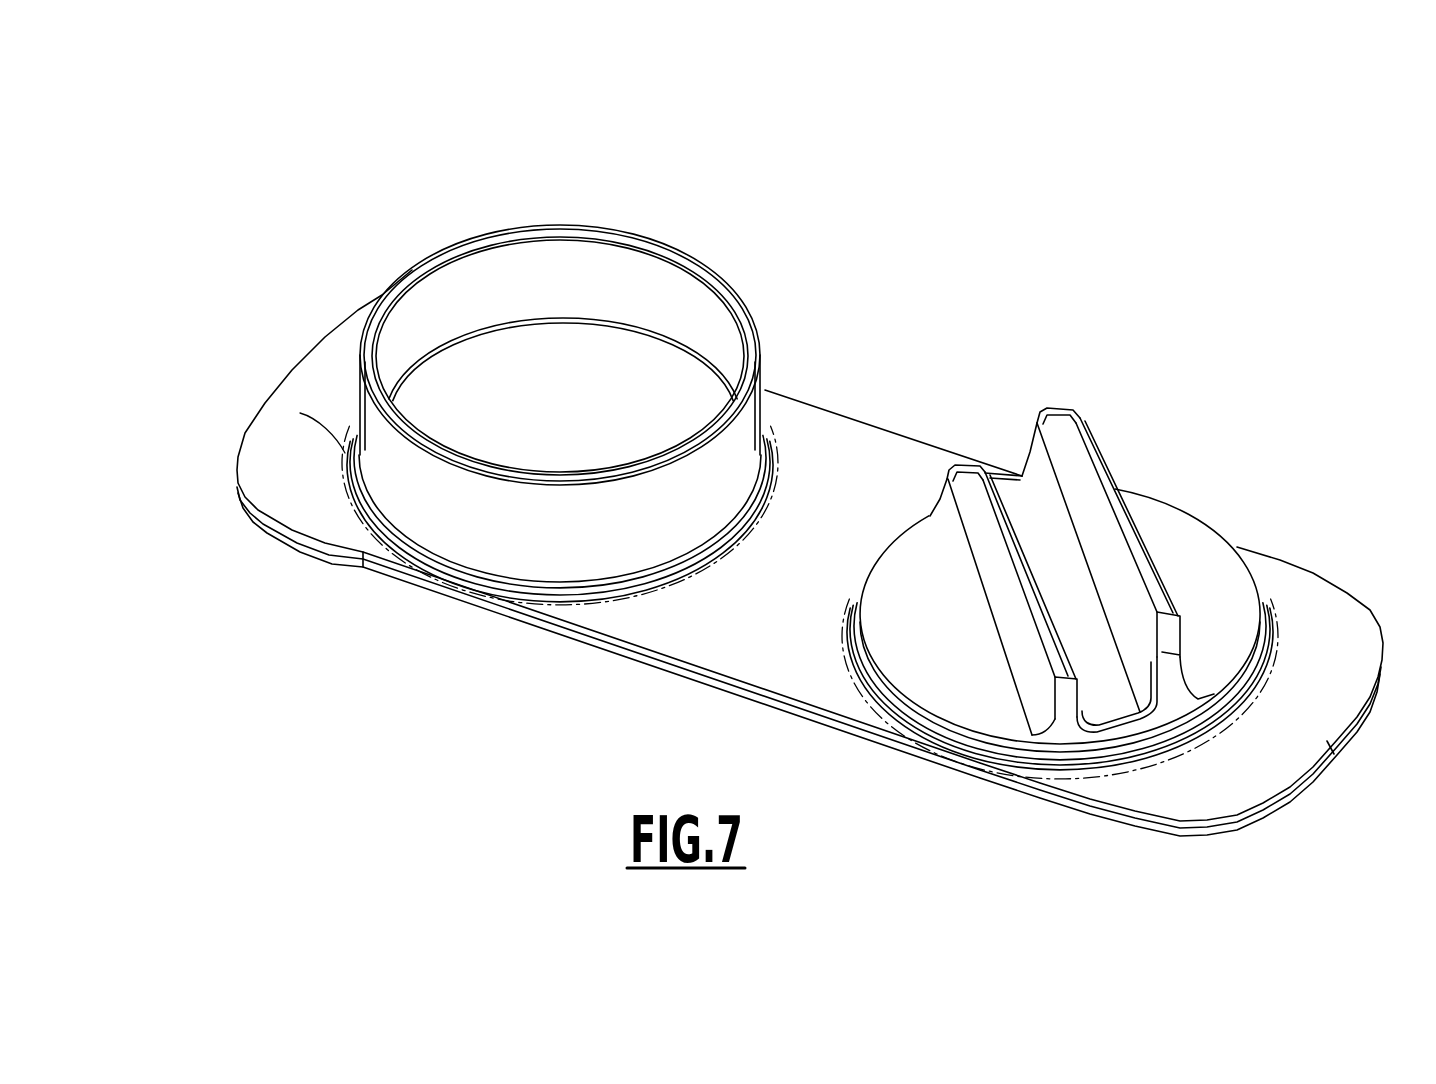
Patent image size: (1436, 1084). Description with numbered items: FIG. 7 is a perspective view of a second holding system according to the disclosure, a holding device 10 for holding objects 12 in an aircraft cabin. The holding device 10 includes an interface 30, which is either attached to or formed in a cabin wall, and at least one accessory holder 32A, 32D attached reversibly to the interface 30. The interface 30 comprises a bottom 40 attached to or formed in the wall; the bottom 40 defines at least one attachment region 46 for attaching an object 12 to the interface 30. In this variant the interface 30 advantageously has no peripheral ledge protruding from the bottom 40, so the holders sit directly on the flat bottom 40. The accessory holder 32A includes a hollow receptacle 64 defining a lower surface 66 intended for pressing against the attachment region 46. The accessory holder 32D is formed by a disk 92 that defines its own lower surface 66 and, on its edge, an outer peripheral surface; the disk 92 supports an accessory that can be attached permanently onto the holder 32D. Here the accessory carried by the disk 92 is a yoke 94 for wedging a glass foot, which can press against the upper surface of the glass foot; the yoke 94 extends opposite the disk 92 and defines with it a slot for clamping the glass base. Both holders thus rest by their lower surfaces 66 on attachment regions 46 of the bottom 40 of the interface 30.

The holding device 10 is at (1243, 297).
The object 12 is at (332, 242).
The interface 30 is at (288, 570).
The accessory holder 32A is at (713, 232).
The accessory holder 32D is at (1100, 398).
The bottom 40 is at (732, 636).
The attachment region 46 is at (292, 408).
The hollow receptacle 64 is at (753, 320).
The lower surface 66 is at (568, 604).
The disk 92 is at (1183, 543).
The yoke 94 is at (1073, 411).